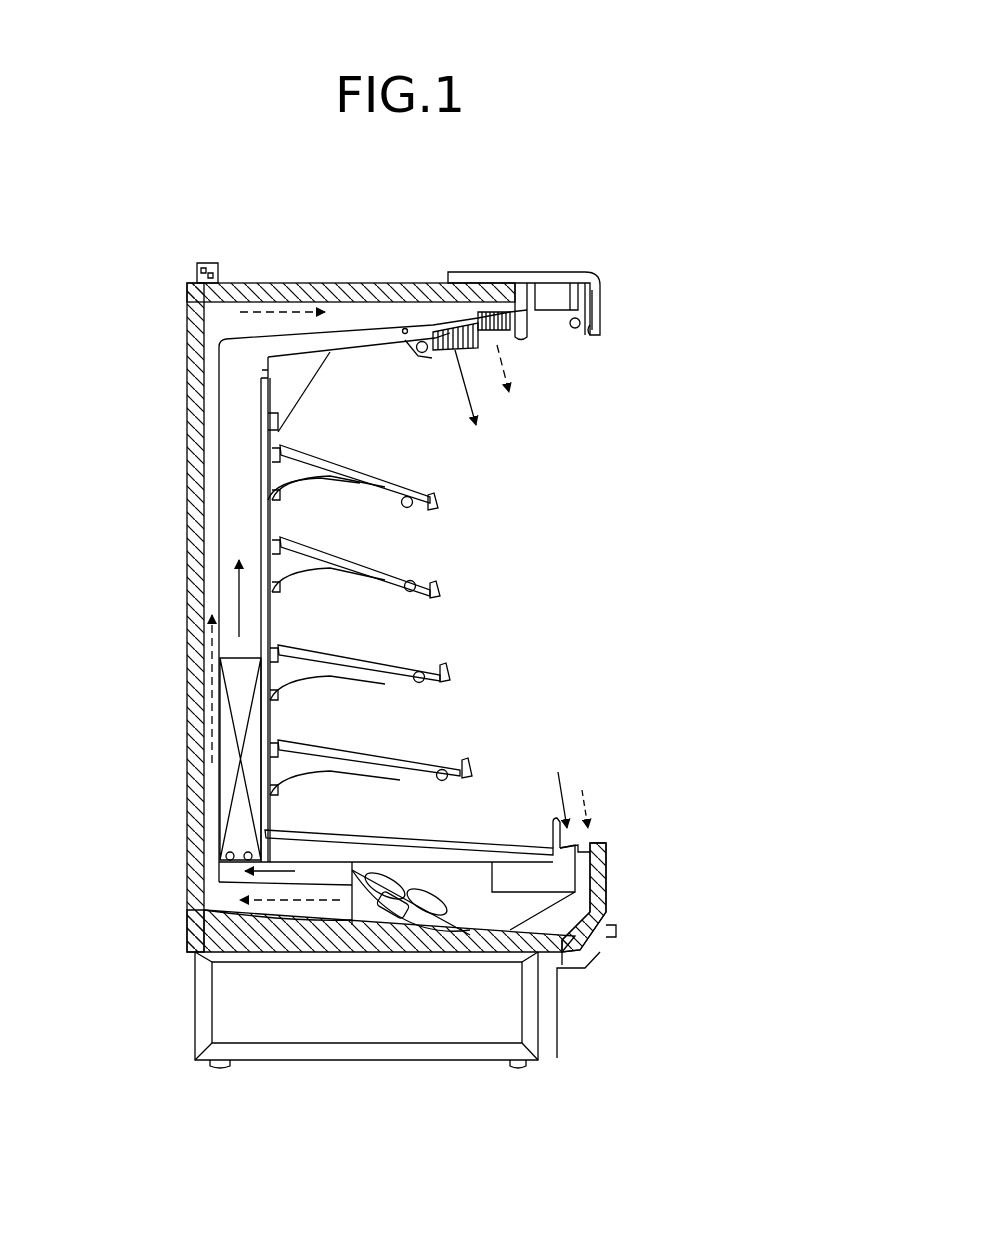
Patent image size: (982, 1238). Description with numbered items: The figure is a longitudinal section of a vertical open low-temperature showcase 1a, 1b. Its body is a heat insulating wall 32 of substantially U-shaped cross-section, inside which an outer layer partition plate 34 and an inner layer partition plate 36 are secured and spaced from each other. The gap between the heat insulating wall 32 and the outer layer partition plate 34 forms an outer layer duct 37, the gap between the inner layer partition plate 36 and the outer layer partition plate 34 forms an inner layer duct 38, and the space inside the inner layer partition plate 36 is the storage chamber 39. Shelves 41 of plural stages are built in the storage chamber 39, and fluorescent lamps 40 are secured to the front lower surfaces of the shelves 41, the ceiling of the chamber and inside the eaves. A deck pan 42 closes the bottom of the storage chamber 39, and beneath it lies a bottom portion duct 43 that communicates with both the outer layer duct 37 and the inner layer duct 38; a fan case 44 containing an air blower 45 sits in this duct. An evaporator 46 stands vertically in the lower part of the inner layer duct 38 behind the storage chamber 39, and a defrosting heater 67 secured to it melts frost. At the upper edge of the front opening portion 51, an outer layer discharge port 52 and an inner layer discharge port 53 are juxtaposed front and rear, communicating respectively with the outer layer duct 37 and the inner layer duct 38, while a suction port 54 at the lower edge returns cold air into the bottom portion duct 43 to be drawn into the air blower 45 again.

The showcase 1a is at (505, 245).
The showcase 1b is at (397, 1010).
The heat insulating wall 32 is at (187, 395).
The outer layer partition plate 34 is at (222, 460).
The inner layer partition plate 36 is at (275, 525).
The outer layer duct 37 is at (205, 480).
The inner layer duct 38 is at (265, 622).
The storage chamber 39 is at (418, 641).
The fluorescent lamp 40 is at (598, 337).
The shelf 41 is at (433, 497).
The deck pan 42 is at (385, 832).
The bottom portion duct 43 is at (520, 868).
The fan case 44 is at (455, 905).
The air blower 45 is at (205, 912).
The evaporator 46 is at (225, 790).
The front opening portion 51 is at (580, 570).
The outer layer discharge port 52 is at (512, 337).
The inner layer discharge port 53 is at (452, 352).
The suction port 54 is at (592, 842).
The defrosting heater 67 is at (228, 855).